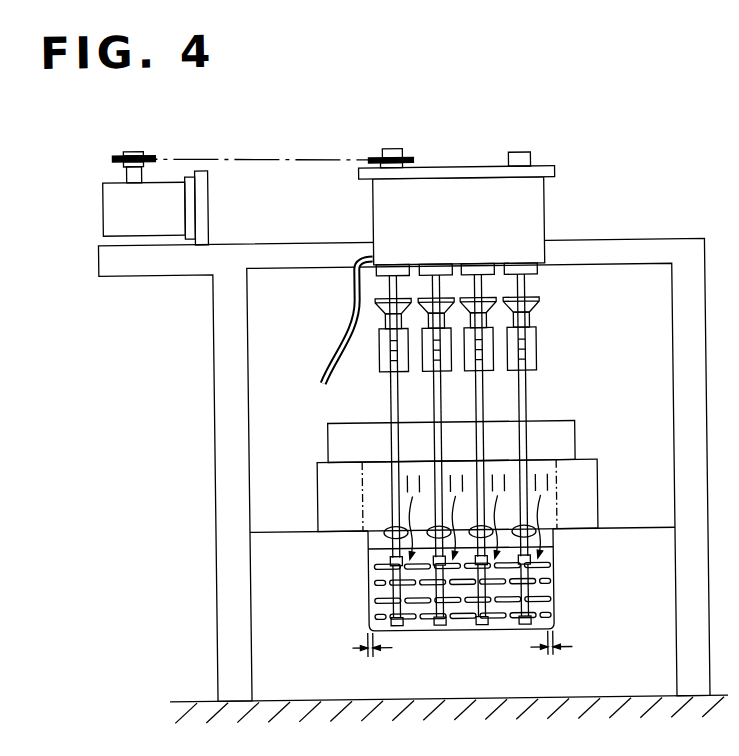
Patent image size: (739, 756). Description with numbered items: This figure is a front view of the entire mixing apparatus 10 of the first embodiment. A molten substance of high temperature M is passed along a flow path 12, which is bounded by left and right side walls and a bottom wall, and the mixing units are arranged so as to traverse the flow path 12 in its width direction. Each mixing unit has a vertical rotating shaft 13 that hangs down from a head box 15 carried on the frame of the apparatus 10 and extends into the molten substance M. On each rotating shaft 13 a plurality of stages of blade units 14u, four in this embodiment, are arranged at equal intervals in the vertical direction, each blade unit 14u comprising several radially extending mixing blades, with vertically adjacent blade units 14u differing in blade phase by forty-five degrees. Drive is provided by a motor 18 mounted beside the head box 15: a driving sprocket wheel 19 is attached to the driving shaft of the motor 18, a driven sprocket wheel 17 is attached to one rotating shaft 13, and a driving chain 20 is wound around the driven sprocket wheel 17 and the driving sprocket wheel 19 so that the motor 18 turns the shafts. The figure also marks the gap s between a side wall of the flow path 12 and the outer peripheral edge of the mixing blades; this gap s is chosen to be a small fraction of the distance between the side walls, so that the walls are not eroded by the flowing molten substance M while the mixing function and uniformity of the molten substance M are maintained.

The substrate processing apparatus frame 10 is at (639, 224).
The flow path 12 is at (551, 592).
The rotating shaft 13 is at (525, 409).
The blade unit 14u is at (372, 566).
The drive head box 15 is at (550, 223).
The driven sprocket wheel 17 is at (415, 148).
The motor 18 is at (106, 201).
The driving sprocket wheel 19 is at (164, 149).
The driving chain 20 is at (310, 150).
The molten substance of high temperature M is at (548, 557).
The gap s is at (462, 655).